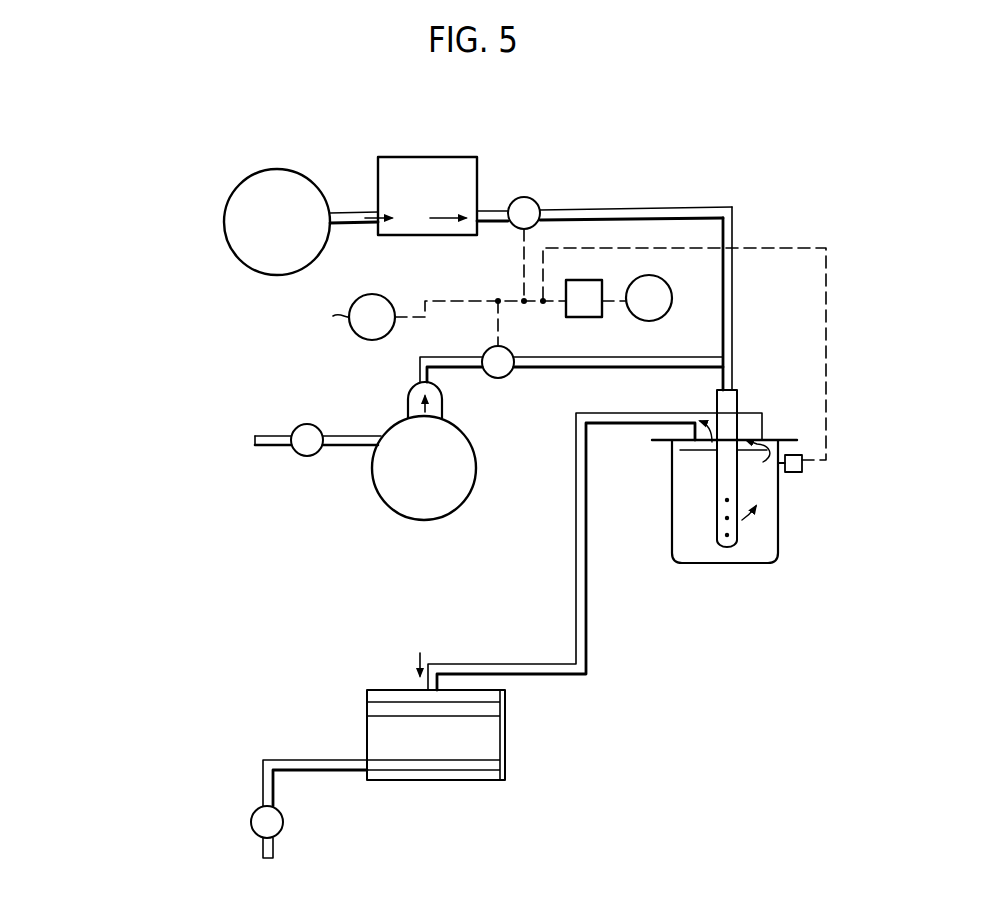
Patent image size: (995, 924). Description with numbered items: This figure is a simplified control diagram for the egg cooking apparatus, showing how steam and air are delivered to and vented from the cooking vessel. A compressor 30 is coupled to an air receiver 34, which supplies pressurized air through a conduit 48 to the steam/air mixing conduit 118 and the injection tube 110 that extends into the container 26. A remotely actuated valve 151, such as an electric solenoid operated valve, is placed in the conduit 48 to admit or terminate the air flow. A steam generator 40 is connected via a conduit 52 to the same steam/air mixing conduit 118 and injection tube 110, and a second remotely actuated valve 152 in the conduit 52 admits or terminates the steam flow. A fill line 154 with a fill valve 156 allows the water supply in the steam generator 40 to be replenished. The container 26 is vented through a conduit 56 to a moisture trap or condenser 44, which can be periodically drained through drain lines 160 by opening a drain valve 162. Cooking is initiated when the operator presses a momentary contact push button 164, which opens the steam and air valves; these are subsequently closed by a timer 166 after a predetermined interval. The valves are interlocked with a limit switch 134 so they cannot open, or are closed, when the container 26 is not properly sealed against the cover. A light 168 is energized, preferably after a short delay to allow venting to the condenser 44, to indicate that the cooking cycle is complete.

The container 26 is at (778, 520).
The compressor 30 is at (298, 142).
The air receiver 34 is at (445, 157).
The steam generator 40 is at (476, 466).
The condenser 44 is at (505, 710).
The conduit 48 is at (648, 208).
The conduit 52 is at (628, 357).
The conduit 56 is at (618, 424).
The injection tube 110 is at (717, 475).
The steam/air mixing conduit 118 is at (732, 310).
The limit switch 134 is at (802, 472).
The remotely actuated valve 151 is at (530, 198).
The remotely actuated valve 152 is at (498, 378).
The fill line 154 is at (345, 436).
The fill valve 156 is at (308, 456).
The drain lines 160 is at (325, 760).
The drain valve 162 is at (251, 816).
The push button 164 is at (355, 337).
The timer 166 is at (582, 280).
The light 168 is at (665, 283).